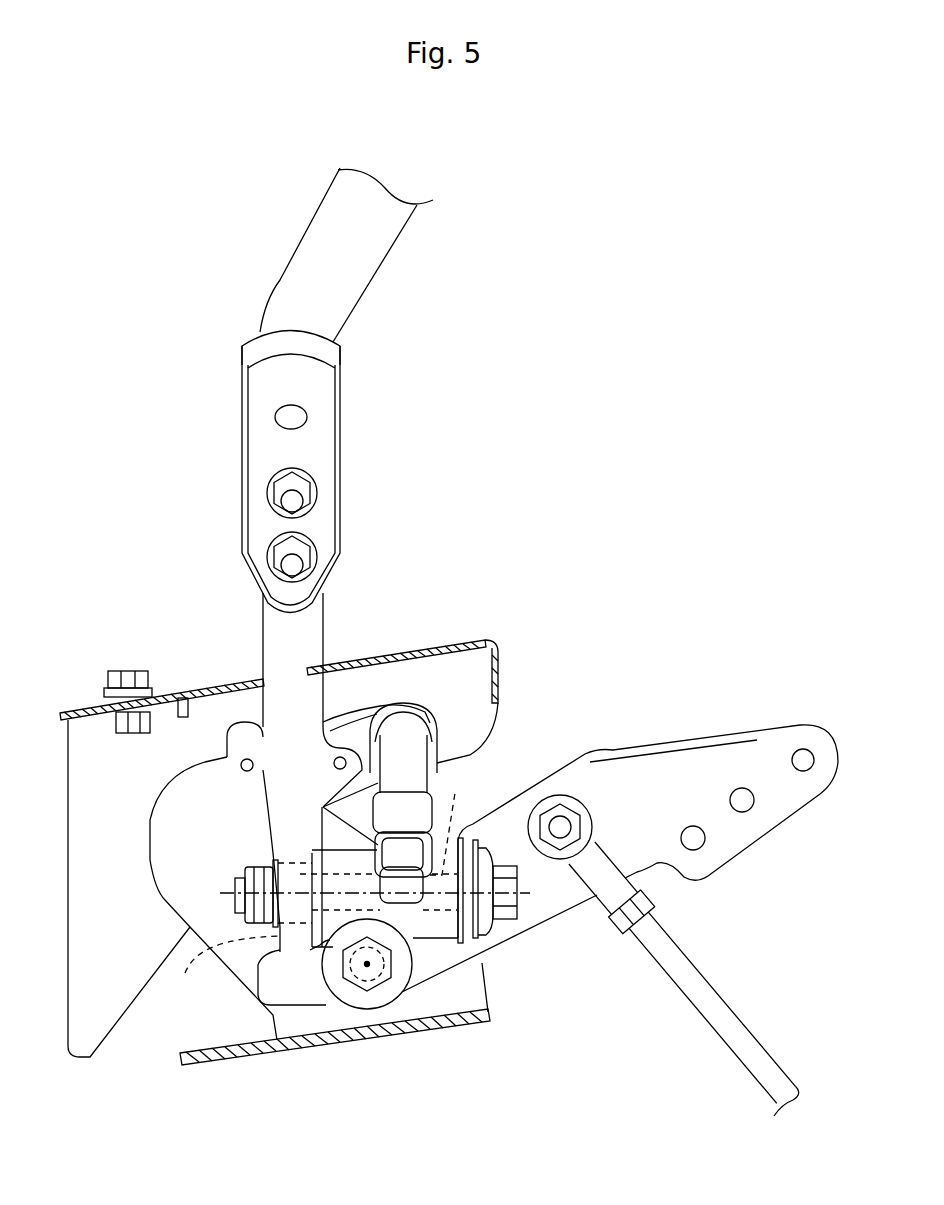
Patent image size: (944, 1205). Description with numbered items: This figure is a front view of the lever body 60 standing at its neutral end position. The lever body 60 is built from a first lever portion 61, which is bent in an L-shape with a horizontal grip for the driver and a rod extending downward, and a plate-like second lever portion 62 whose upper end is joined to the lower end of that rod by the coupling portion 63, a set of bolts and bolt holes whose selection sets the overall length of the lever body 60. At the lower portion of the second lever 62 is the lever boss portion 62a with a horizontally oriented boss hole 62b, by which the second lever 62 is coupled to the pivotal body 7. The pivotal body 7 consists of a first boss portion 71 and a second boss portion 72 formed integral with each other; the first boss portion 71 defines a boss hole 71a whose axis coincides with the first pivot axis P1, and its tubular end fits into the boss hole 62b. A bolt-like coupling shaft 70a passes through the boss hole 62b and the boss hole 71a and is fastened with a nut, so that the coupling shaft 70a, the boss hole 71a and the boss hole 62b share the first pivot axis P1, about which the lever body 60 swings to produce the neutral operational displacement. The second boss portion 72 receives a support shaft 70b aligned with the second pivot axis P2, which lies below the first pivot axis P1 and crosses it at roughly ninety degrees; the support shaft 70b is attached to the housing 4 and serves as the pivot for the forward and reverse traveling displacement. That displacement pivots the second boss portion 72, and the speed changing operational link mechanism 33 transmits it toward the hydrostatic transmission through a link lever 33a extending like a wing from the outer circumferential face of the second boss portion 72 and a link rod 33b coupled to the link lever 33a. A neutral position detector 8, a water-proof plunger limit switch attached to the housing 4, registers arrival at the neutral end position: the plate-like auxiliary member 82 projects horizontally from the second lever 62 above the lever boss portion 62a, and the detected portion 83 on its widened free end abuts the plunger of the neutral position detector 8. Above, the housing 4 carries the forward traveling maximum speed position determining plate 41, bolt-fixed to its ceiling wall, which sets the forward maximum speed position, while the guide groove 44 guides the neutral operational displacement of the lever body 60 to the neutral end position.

The housing 4 is at (467, 643).
The guide groove 44 is at (312, 668).
The forward traveling maximum speed position determining plate 41 is at (166, 690).
The lever body 60 is at (215, 427).
The first lever portion 61 is at (305, 243).
The second lever portion 62 is at (295, 705).
The lever boss portion 62a is at (263, 950).
The boss hole 62b is at (223, 969).
The coupling portion 63 is at (318, 517).
The pivotal body 7 is at (505, 963).
The coupling shaft 70a is at (233, 885).
The support shaft 70b is at (345, 980).
The first boss portion 71 is at (343, 848).
The boss hole 71a is at (452, 825).
The second boss portion 72 is at (420, 963).
The neutral position detector 8 is at (410, 768).
The auxiliary member 82 is at (410, 712).
The detected portion 83 is at (363, 730).
The speed changing operational link mechanism 33 is at (592, 810).
The link lever 33a is at (645, 770).
The link rod 33b is at (727, 1027).
The first pivot axis P1 is at (235, 893).
The second pivot axis P2 is at (368, 968).